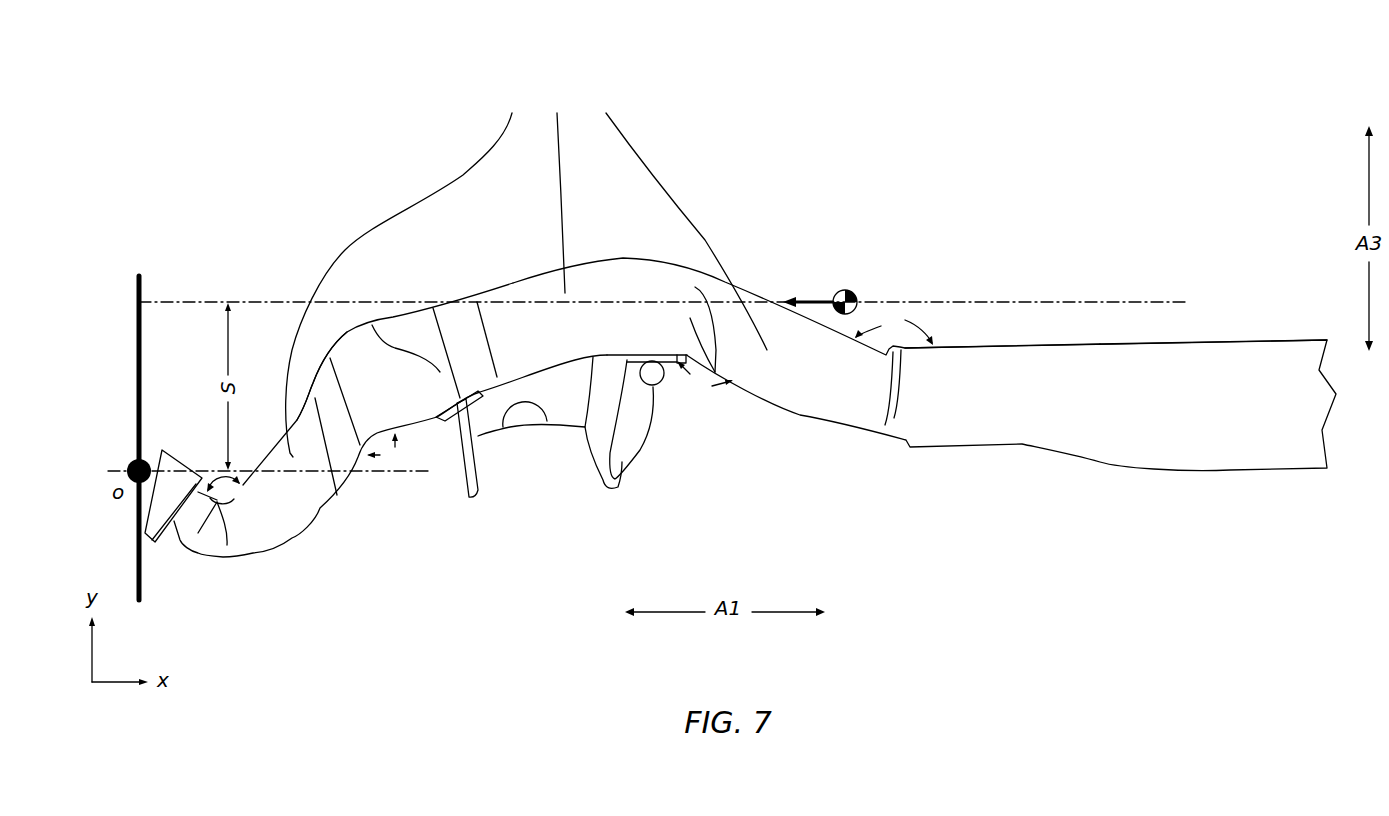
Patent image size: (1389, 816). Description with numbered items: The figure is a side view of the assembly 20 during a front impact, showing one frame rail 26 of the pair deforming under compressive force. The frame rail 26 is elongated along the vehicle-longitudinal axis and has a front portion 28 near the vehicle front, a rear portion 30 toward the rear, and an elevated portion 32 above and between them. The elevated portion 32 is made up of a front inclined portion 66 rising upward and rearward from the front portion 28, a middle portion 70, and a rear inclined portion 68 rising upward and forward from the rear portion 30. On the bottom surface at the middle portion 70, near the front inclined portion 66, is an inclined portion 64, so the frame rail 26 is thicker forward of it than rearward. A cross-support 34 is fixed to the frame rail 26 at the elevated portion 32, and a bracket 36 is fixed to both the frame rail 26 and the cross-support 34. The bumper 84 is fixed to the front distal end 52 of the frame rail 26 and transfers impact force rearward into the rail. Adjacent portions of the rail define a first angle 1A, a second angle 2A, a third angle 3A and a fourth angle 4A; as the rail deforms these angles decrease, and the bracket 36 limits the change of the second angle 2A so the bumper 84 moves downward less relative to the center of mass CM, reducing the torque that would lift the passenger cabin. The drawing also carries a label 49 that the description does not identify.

The assembly 20 is at (762, 200).
The frame rail 26 is at (1080, 440).
The front portion 28 is at (253, 548).
The rear portion 30 is at (1258, 450).
The elevated portion 32 is at (623, 95).
The cross-support 34 is at (563, 410).
The bracket 36 is at (456, 437).
The curved arm portion 49 is at (358, 170).
The front distal end 52 is at (200, 556).
The inclined portion 64 is at (435, 410).
The front inclined portion 66 is at (404, 274).
The rear inclined portion 68 is at (679, 220).
The middle portion 70 is at (556, 192).
The bumper 84 is at (152, 544).
The first angle 1A is at (211, 482).
The second angle 2A is at (386, 451).
The third angle 3A is at (705, 378).
The fourth angle 4A is at (894, 325).
The center of mass CM is at (853, 290).